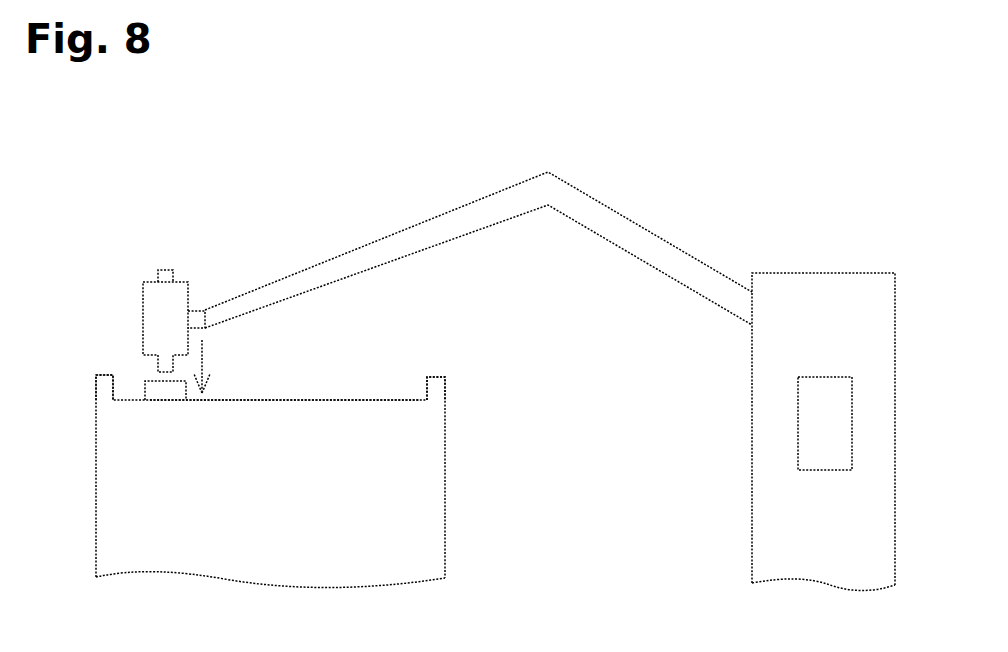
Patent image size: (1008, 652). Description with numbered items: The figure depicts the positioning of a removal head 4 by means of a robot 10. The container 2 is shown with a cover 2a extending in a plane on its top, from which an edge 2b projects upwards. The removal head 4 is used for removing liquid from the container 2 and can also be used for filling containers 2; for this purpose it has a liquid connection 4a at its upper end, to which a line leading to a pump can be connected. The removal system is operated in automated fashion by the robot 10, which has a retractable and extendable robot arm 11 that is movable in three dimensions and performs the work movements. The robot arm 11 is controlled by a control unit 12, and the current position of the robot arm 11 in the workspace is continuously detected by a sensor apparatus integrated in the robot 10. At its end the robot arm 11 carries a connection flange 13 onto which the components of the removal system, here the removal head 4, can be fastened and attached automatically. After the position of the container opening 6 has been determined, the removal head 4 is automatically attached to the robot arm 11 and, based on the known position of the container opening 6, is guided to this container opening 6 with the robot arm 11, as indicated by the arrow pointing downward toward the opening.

The container 2 is at (458, 483).
The cover 2a is at (352, 400).
The edge 2b is at (100, 392).
The removal head 4 is at (143, 320).
The liquid connection 4a is at (160, 270).
The container opening 6 is at (166, 390).
The robot 10 is at (826, 323).
The robot arm 11 is at (650, 230).
The control unit 12 is at (809, 433).
The connection flange 13 is at (196, 312).